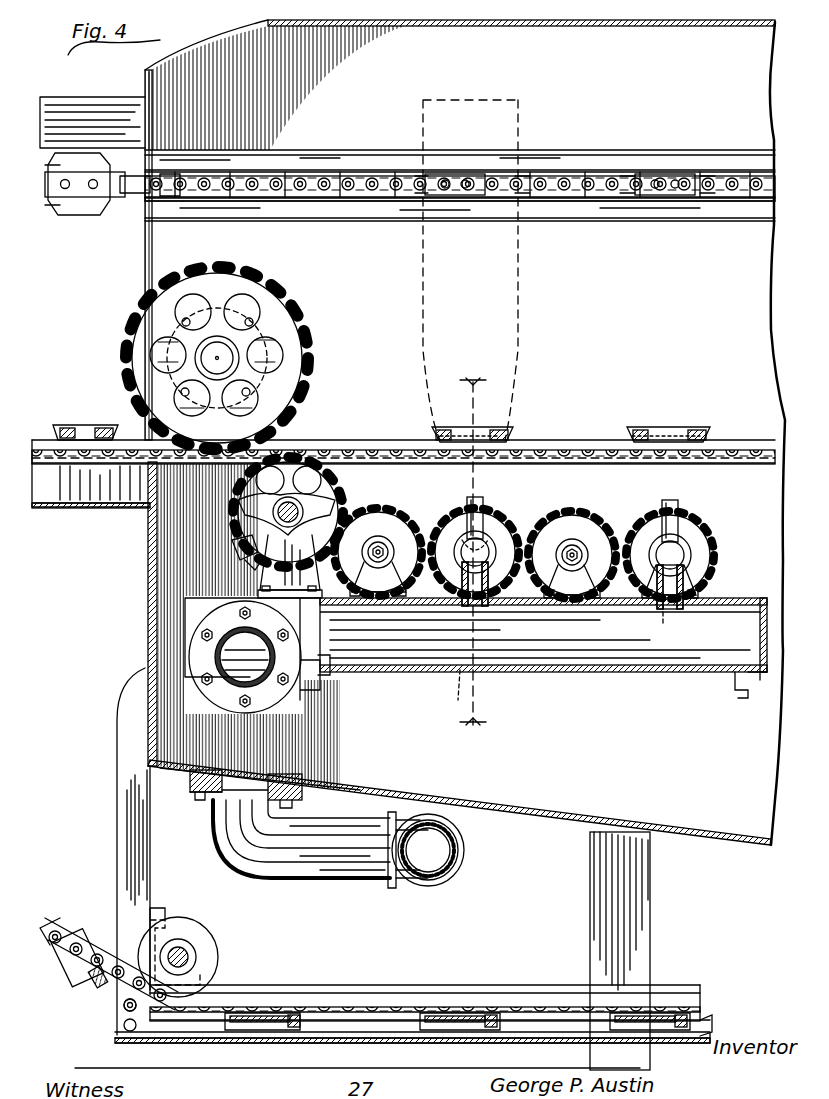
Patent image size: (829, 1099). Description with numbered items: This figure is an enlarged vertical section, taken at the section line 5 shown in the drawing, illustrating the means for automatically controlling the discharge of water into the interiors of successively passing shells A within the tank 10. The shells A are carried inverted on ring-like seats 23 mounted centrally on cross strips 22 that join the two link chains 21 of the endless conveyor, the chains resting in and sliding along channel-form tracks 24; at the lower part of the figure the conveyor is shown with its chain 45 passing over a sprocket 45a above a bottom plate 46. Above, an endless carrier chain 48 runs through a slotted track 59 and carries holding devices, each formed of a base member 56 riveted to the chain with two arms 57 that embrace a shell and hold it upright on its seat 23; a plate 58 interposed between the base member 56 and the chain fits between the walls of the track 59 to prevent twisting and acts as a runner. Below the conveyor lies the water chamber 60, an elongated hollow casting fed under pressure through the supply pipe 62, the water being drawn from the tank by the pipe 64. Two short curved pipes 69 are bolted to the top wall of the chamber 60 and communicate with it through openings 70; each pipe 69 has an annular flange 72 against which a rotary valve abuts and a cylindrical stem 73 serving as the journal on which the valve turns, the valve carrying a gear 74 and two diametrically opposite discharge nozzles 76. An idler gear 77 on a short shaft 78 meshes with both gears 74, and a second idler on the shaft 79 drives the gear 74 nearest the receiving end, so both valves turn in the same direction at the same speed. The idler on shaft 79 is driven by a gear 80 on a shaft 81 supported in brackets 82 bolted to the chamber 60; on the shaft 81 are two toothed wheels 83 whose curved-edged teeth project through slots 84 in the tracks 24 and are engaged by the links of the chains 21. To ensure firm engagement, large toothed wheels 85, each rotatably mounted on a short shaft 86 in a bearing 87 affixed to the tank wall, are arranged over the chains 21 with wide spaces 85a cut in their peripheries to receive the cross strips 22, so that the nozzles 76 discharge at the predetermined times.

The section line 5- 5 is at (473, 549).
The tank 10 is at (778, 552).
The link chains 21 is at (368, 425).
The cross strips 22 is at (78, 438).
The ring 23 is at (58, 425).
The tracks 24 is at (75, 508).
The lower conveyor chain 45 is at (185, 1022).
The sprocket 45a is at (215, 948).
The bottom plate 46 is at (360, 1043).
The carrier chain 48 is at (138, 205).
The base member 56 is at (70, 195).
The arms 57 is at (135, 198).
The plate 58 is at (92, 208).
The track 59 is at (595, 150).
The water chamber 60 is at (628, 675).
The supply pipe 62 is at (188, 650).
The pipe 64 is at (465, 858).
The curved pipes 69 is at (478, 610).
The openings 70 is at (475, 620).
The annular flange 72 is at (490, 540).
The cylindrical stem 73 is at (568, 510).
The gear 74 is at (458, 512).
The discharge nozzles 76 is at (478, 510).
The idler gear 77 is at (385, 512).
The short shaft 78 is at (572, 553).
The shaft 79 is at (378, 550).
The gear 80 is at (217, 563).
The shaft 81 is at (280, 525).
The brackets 82 is at (268, 562).
The toothed wheels 83 is at (230, 512).
The slots 84 is at (245, 470).
The large toothed wheels 85 is at (226, 333).
The wide spaces 85a is at (112, 372).
The short shaft 86 is at (215, 355).
The bearing 87 is at (238, 316).
The shells A is at (530, 340).